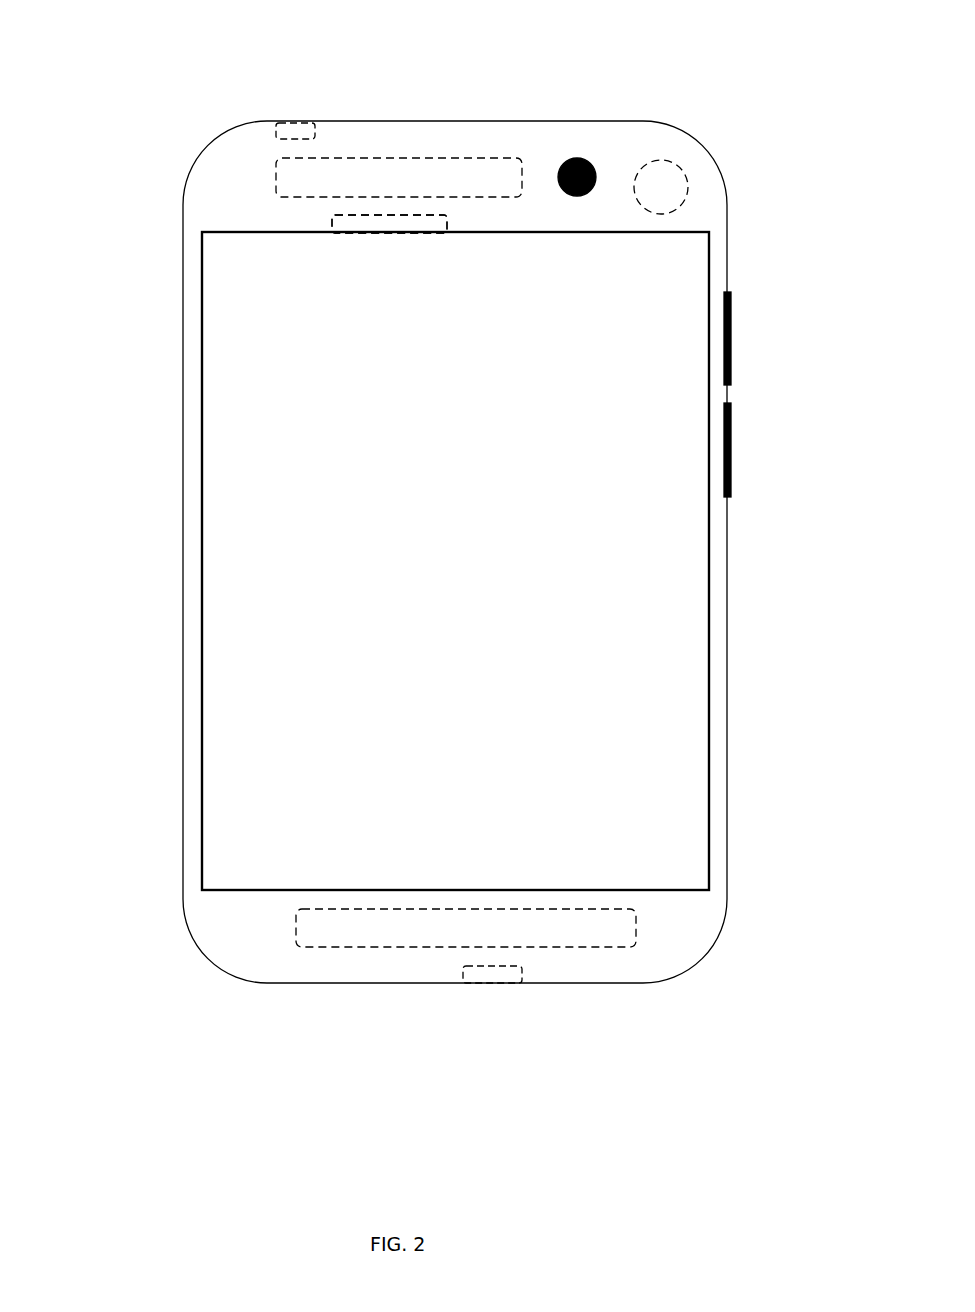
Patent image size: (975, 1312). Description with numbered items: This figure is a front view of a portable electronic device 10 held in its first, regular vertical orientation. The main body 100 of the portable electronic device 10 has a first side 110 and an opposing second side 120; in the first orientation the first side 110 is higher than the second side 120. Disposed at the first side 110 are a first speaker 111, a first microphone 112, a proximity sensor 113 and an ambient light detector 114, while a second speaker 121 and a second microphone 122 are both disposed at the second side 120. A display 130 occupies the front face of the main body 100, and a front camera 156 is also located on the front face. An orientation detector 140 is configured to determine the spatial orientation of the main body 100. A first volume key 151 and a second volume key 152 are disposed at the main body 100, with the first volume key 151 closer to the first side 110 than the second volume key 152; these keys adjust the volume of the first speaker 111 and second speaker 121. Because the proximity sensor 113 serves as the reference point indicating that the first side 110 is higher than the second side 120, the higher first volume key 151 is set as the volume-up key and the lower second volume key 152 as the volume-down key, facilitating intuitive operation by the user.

The portable electronic device 10 is at (55, 29).
The main body 100 is at (182, 628).
The first side 110 is at (238, 178).
The first speaker 111 is at (408, 177).
The first microphone 112 is at (290, 122).
The proximity sensor 113 is at (445, 215).
The ambient light detector 114 is at (389, 224).
The second side 120 is at (240, 928).
The second speaker 121 is at (577, 928).
The second microphone 122 is at (487, 985).
The display 130 is at (222, 495).
The orientation detector 140 is at (671, 164).
The first volume key 151 is at (728, 328).
The second volume key 152 is at (728, 460).
The front camera 156 is at (588, 160).